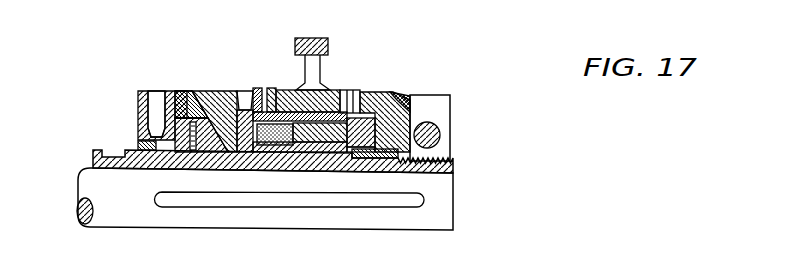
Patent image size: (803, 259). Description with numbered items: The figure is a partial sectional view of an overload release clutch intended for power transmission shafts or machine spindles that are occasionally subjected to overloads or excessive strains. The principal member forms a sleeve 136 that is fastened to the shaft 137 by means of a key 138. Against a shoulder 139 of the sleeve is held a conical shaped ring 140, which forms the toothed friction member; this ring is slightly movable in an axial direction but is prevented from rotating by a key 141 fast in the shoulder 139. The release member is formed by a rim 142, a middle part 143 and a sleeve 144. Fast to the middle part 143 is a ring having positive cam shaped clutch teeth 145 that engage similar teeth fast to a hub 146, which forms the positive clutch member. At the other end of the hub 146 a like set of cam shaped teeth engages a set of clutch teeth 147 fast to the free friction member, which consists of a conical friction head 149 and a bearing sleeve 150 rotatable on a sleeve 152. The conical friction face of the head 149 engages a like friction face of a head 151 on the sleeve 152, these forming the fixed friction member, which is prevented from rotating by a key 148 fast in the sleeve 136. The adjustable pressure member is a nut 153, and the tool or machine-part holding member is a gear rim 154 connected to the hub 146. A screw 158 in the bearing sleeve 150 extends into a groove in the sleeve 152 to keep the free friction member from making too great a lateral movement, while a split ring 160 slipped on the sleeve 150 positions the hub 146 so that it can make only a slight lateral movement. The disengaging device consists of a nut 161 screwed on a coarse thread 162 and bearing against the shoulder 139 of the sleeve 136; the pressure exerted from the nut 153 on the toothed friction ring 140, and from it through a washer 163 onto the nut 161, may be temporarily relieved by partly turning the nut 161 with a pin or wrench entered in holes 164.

The sleeve 136 is at (93, 158).
The shaft 137 is at (77, 217).
The key 138 is at (413, 205).
The shoulder 139 is at (176, 148).
The conical shaped ring 140 is at (185, 97).
The key 141 is at (193, 150).
The rim 142 is at (213, 90).
The middle part 143 is at (245, 92).
The sleeve 144 is at (258, 152).
The positive cam shaped clutch teeth 145 is at (262, 90).
The hub 146 is at (297, 92).
The clutch teeth 147 is at (353, 100).
The key 148 is at (393, 150).
The conical friction head 149 is at (385, 93).
The bearing sleeve 150 is at (303, 152).
The head 151 is at (420, 95).
The sleeve 152 is at (332, 152).
The nut 153 is at (442, 120).
The gear rim 154 is at (313, 45).
The screw 158 is at (368, 92).
The split ring 160 is at (268, 100).
The nut 161 is at (137, 115).
The coarse thread 162 is at (140, 144).
The washer 163 is at (160, 91).
The holes 164 is at (155, 91).